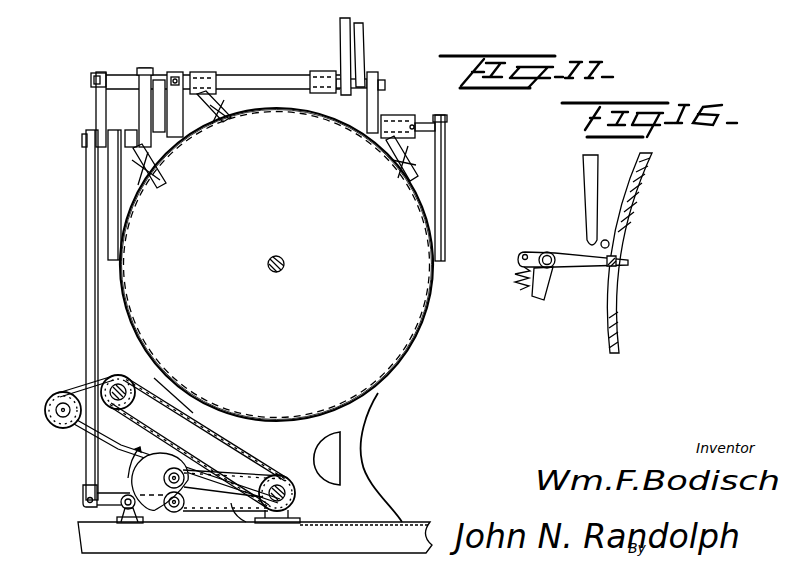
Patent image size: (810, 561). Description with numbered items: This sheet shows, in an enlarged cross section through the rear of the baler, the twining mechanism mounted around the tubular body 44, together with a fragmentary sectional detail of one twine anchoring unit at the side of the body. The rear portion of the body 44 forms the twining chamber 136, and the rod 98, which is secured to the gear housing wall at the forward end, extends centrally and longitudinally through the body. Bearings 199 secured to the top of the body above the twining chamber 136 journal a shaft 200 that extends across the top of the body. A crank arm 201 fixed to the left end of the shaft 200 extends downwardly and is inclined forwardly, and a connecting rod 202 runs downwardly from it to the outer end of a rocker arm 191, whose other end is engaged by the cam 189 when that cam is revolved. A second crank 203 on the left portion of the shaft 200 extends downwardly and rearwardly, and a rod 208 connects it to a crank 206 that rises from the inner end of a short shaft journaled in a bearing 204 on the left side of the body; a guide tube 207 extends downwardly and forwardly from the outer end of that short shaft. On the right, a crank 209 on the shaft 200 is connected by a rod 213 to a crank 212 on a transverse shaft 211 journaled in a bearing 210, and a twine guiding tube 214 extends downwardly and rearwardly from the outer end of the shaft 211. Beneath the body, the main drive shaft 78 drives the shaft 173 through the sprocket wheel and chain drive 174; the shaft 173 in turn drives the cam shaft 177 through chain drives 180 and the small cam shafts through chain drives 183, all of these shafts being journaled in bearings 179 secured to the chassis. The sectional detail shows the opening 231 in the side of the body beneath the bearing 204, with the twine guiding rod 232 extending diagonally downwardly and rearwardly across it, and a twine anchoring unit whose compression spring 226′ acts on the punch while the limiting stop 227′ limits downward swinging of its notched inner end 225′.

In FIG. 11, the tubular body 44 is at (409, 355).
In FIG. 16, the tubular body 44 is at (609, 349).
In FIG. 11, the main drive shaft 78 is at (55, 423).
In FIG. 11, the rod 98 is at (284, 268).
In FIG. 11, the twining chamber 136 is at (418, 300).
In FIG. 11, the shaft 173 is at (279, 490).
In FIG. 11, the sprocket wheel and chain drive 174 is at (77, 436).
In FIG. 11, the cam shaft 177 is at (116, 378).
In FIG. 11, the bearings 179 is at (140, 521).
In FIG. 11, the sprocket wheel and chain drives 180 is at (154, 380).
In FIG. 11, the sprocket wheel and chain drives 183 is at (237, 508).
In FIG. 11, the cam 189 is at (183, 464).
In FIG. 11, the rocker arm 191 is at (116, 503).
In FIG. 11, the bearings 199 is at (204, 98).
In FIG. 11, the shaft 200 is at (262, 75).
In FIG. 11, the crank arm 201 is at (95, 108).
In FIG. 11, the connecting rod 202 is at (93, 331).
In FIG. 11, the second crank 203 is at (180, 112).
In FIG. 11, the bearing 204 is at (150, 172).
In FIG. 11, the crank 206 is at (141, 96).
In FIG. 11, the guide tube 207 is at (116, 212).
In FIG. 16, the guide tube 207 is at (590, 240).
In FIG. 11, the rod 208 is at (160, 72).
In FIG. 11, the crank 209 is at (343, 50).
In FIG. 11, the bearing 210 is at (399, 162).
In FIG. 11, the shaft 211 is at (414, 128).
In FIG. 11, the crank 212 is at (380, 96).
In FIG. 11, the rod 213 is at (364, 58).
In FIG. 11, the twine guiding tube 214 is at (440, 197).
In FIG. 16, the notched inner end 225′ is at (630, 259).
In FIG. 16, the compression spring 226′ is at (515, 272).
In FIG. 16, the limiting stop 227′ is at (556, 273).
In FIG. 16, the opening 231 is at (618, 280).
In FIG. 16, the twine guiding rod 232 is at (620, 242).